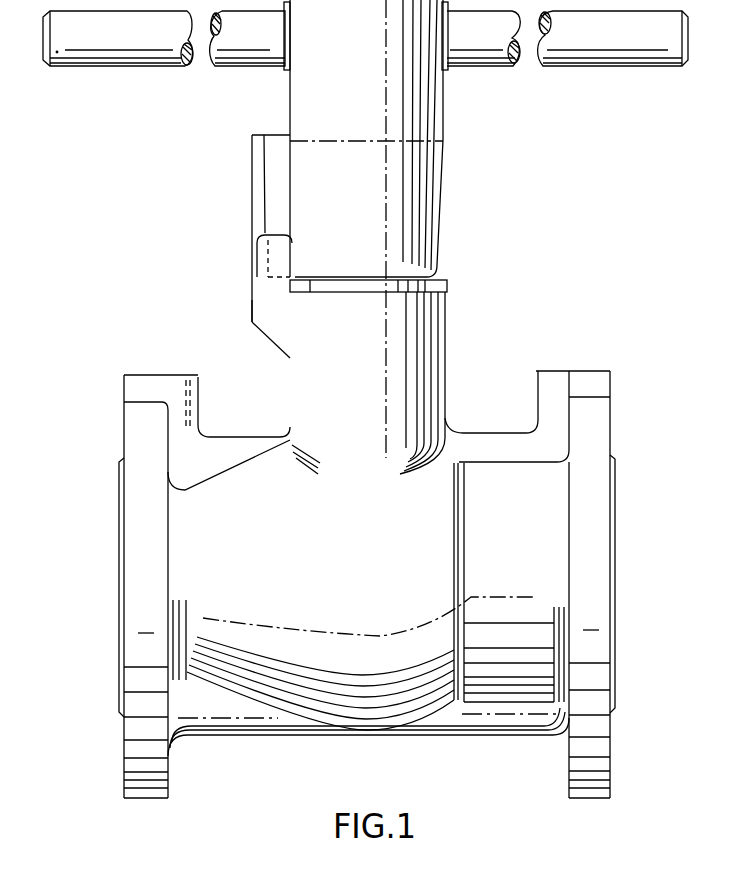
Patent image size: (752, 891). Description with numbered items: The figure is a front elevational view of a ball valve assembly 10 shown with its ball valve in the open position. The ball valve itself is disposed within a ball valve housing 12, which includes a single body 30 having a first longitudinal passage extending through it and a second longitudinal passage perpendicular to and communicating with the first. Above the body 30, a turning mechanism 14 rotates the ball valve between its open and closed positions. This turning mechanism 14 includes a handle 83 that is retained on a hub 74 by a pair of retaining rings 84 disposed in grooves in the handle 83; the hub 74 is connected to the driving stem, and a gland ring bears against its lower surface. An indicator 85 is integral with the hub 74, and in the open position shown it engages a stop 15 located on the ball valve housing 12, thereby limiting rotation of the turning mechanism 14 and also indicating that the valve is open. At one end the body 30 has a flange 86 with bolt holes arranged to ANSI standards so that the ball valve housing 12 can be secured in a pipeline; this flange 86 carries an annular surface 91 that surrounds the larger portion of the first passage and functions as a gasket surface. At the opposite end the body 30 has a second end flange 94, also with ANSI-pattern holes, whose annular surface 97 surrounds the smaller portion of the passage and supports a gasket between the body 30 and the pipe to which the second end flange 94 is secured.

The ball valve assembly 10 is at (104, 766).
The ball valve housing 12 is at (229, 427).
The turning mechanism 14 is at (447, 238).
The stop 15 is at (264, 302).
The body 30 is at (227, 747).
The hub 74 is at (445, 163).
The handle 83 is at (117, 61).
The retaining rings 84 is at (284, 73).
The indicator 85 is at (253, 198).
The flange 86 is at (593, 797).
The annular surface 91 is at (616, 650).
The second end flange 94 is at (152, 800).
The annular surface 97 is at (120, 657).